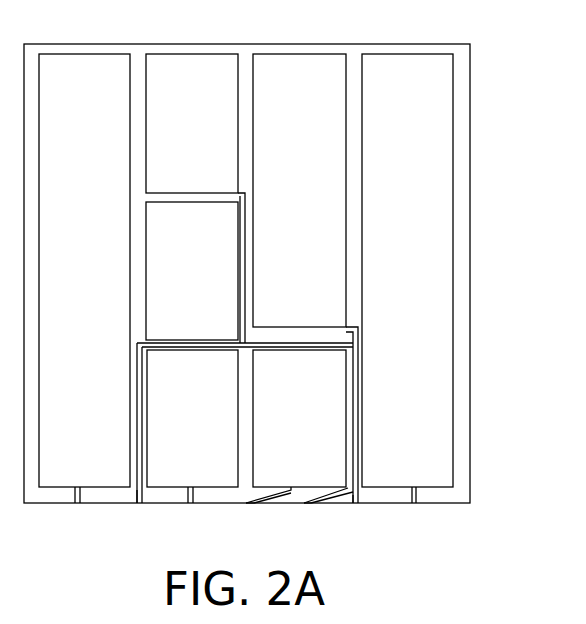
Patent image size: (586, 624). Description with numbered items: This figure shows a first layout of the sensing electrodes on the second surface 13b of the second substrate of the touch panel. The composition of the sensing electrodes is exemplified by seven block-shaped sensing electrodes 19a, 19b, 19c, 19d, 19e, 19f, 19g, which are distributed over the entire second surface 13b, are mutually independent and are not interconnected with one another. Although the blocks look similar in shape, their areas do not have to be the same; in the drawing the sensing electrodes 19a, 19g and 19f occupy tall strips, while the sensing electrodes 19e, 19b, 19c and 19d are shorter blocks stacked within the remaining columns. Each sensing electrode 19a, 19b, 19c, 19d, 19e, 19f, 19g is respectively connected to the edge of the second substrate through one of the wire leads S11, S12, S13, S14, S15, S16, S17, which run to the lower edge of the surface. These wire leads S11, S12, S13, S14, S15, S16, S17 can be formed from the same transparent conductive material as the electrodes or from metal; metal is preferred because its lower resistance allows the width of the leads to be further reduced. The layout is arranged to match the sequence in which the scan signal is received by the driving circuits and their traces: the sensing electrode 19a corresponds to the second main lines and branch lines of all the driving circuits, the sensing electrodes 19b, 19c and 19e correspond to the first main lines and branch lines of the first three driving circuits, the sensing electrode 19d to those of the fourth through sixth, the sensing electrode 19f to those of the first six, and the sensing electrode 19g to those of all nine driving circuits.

The second surface 13b is at (568, 32).
The sensing electrode 19a is at (65, 94).
The sensing electrode 19b is at (172, 241).
The sensing electrode 19c is at (172, 389).
The sensing electrode 19d is at (279, 389).
The sensing electrode 19e is at (172, 94).
The sensing electrode 19f is at (280, 94).
The sensing electrode 19g is at (387, 94).
The wire lead S11 is at (77, 512).
The wire lead S12 is at (132, 513).
The wire lead S13 is at (187, 512).
The wire lead S14 is at (242, 520).
The wire lead S15 is at (299, 520).
The wire lead S16 is at (355, 516).
The wire lead S17 is at (412, 512).